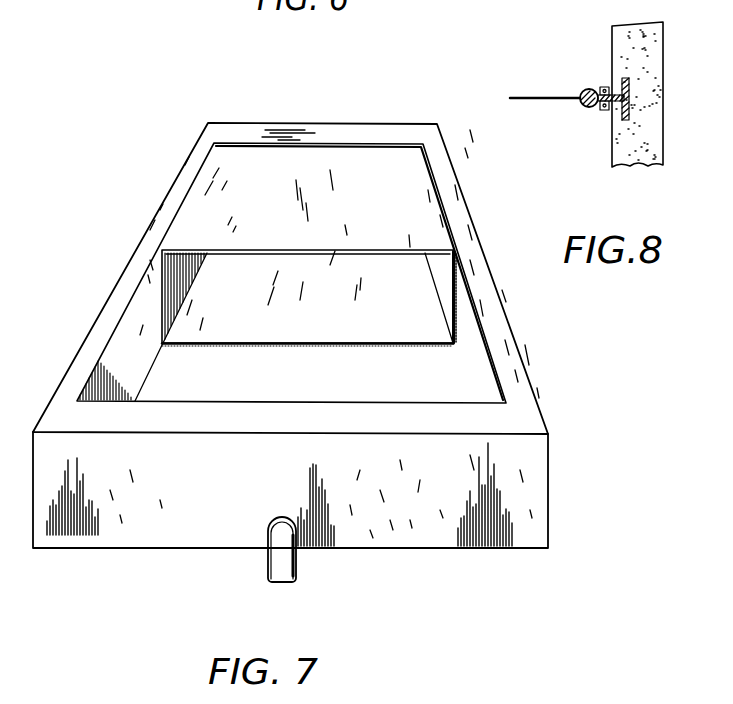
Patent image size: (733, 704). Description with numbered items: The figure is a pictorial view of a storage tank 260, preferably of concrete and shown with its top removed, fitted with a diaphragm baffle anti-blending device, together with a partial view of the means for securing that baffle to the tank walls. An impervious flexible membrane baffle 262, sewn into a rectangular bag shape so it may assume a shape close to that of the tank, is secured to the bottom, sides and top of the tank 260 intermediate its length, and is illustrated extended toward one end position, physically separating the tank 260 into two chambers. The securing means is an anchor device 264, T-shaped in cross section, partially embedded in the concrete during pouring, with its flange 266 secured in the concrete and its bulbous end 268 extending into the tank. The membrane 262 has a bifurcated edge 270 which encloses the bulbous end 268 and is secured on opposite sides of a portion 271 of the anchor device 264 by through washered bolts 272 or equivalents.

In FIG. 7, the tank 260 is at (404, 117).
In FIG. 7, the membrane baffle 262 is at (195, 185).
In FIG. 8, the membrane baffle 262 is at (535, 97).
In FIG. 8, the anchor device 264 is at (630, 80).
In FIG. 8, the flange 266 is at (630, 98).
In FIG. 8, the bulbous end 268 is at (597, 105).
In FIG. 8, the bifurcated edge 270 is at (598, 88).
In FIG. 8, the portion of anchor device 271 is at (600, 110).
In FIG. 8, the washered bolts 272 is at (607, 112).